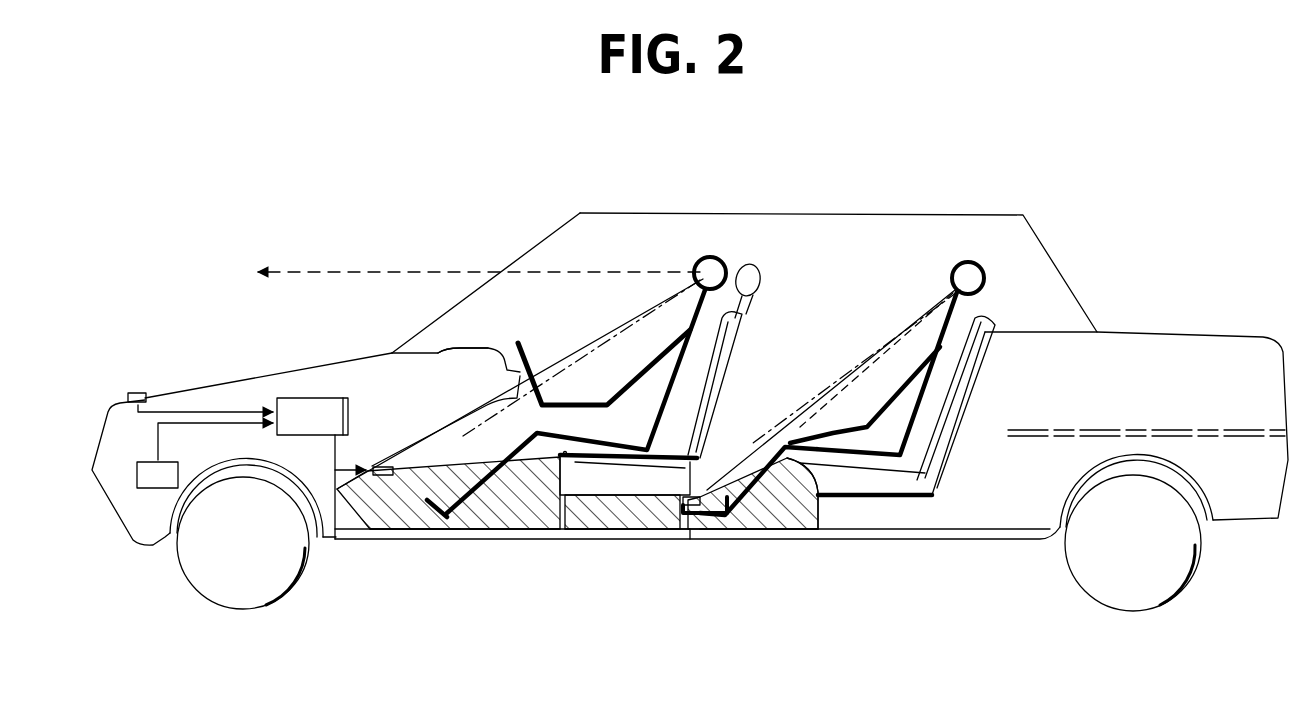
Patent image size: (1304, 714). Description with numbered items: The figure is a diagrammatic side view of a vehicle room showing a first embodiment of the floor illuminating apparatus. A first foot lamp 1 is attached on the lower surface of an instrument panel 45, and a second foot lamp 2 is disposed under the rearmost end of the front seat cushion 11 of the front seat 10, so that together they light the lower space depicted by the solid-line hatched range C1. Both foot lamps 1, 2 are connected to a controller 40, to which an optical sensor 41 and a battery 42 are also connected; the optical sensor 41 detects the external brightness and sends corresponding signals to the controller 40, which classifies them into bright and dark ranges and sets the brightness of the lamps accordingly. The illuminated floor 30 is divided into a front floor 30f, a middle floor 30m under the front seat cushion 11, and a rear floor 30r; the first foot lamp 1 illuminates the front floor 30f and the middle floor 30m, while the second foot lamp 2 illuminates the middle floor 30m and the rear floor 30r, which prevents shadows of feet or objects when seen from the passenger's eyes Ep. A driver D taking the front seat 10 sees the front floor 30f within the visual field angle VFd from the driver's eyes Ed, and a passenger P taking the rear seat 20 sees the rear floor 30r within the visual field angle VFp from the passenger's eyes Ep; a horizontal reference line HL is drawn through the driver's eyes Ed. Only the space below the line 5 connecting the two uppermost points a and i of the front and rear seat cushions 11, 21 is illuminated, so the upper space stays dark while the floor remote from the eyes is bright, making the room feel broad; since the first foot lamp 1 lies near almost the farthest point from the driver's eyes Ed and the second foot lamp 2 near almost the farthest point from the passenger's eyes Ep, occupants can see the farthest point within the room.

The first foot lamp 1 is at (372, 538).
The second foot lamp 2 is at (705, 513).
The line 5 is at (732, 445).
The front seat 10 is at (738, 330).
The front seat cushion 11 is at (625, 482).
The rear seat 20 is at (983, 318).
The rear seat cushion 21 is at (923, 483).
The vehicle floor 30 is at (660, 525).
The front floor 30f is at (462, 523).
The middle floor 30m is at (600, 512).
The rear floor 30r is at (790, 525).
The controller 40 is at (292, 396).
The optical sensor 41 is at (140, 392).
The battery 42 is at (155, 489).
The instrument panel 45 is at (447, 432).
The hatched range C1 is at (527, 502).
The horizontal line HL is at (297, 268).
The visual field angle VFd is at (628, 348).
The visual field angle VFp is at (849, 390).
The driver's eyes Ed is at (707, 256).
The passenger's eyes Ep is at (960, 260).
The driver D is at (728, 262).
The passenger P is at (977, 260).
The uppermost point a is at (567, 452).
The uppermost point i is at (817, 448).